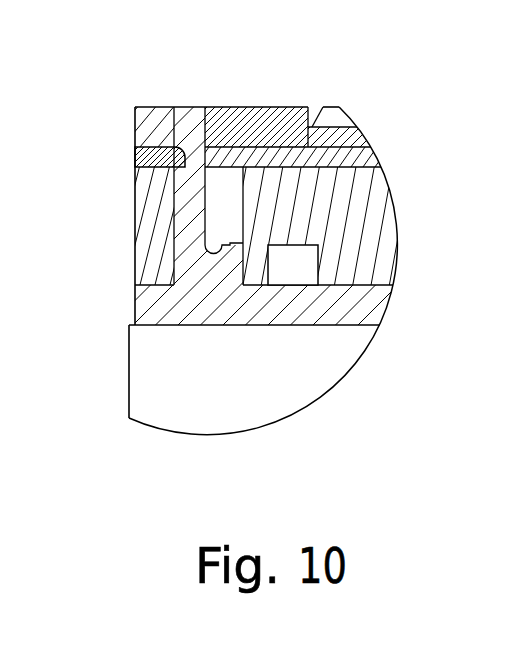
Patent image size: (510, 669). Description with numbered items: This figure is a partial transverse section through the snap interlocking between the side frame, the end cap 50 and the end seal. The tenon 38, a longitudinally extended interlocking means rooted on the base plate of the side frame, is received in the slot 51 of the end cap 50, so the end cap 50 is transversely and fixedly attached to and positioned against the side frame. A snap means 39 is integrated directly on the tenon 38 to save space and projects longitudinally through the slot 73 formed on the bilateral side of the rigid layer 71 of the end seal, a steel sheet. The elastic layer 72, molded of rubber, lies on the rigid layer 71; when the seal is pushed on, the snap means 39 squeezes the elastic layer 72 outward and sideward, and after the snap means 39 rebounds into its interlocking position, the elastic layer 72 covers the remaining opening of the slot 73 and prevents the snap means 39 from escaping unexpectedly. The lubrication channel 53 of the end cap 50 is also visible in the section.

The tenon 38 is at (200, 270).
The snap means 39 is at (176, 120).
The end cap 50 is at (350, 212).
The slot 51 is at (220, 220).
The lubrication channel 53 is at (290, 267).
The rigid layer 71 is at (360, 140).
The elastic layer 72 is at (286, 115).
The slot 73 is at (234, 123).